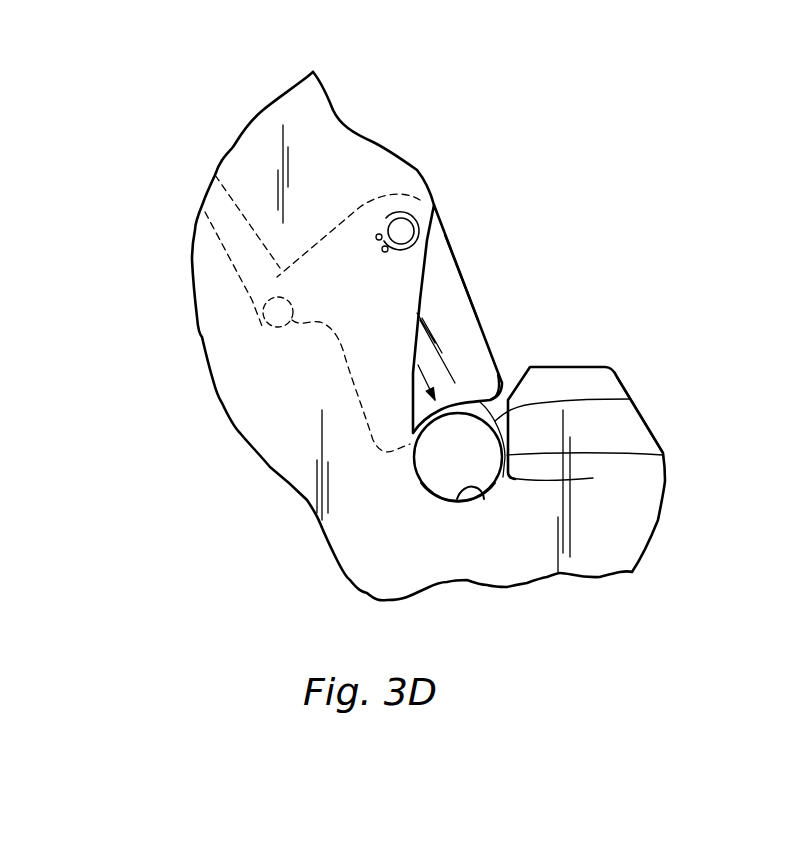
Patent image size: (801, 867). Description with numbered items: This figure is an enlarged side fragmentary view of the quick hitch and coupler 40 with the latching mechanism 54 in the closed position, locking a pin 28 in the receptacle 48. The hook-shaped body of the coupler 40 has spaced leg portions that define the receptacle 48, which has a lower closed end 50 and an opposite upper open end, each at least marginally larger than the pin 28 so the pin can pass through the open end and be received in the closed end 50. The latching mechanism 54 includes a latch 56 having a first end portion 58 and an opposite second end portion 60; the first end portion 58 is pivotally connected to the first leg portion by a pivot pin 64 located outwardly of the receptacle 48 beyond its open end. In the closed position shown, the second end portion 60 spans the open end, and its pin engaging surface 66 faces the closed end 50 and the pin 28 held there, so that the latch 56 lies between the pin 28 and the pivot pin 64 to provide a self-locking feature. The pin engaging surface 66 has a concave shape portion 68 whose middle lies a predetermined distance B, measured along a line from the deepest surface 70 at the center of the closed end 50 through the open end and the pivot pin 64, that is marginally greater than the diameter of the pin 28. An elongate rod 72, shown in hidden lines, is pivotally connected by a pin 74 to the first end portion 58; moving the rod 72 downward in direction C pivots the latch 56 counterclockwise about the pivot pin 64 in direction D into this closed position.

The pin 28 is at (593, 478).
The coupler 40 is at (650, 418).
The receptacle 48 is at (630, 399).
The lower closed end 50 is at (443, 473).
The latching mechanism 54 is at (455, 253).
The latch 56 is at (480, 318).
The first end portion 58 is at (407, 193).
The second end portion 60 is at (503, 366).
The pivot pin 64 is at (400, 212).
The pin engaging surface 66 is at (642, 456).
The concave shape portion 68 is at (663, 455).
The deepest surface 70 is at (460, 492).
The elongate rod 72 is at (210, 220).
The pin 74 is at (263, 317).